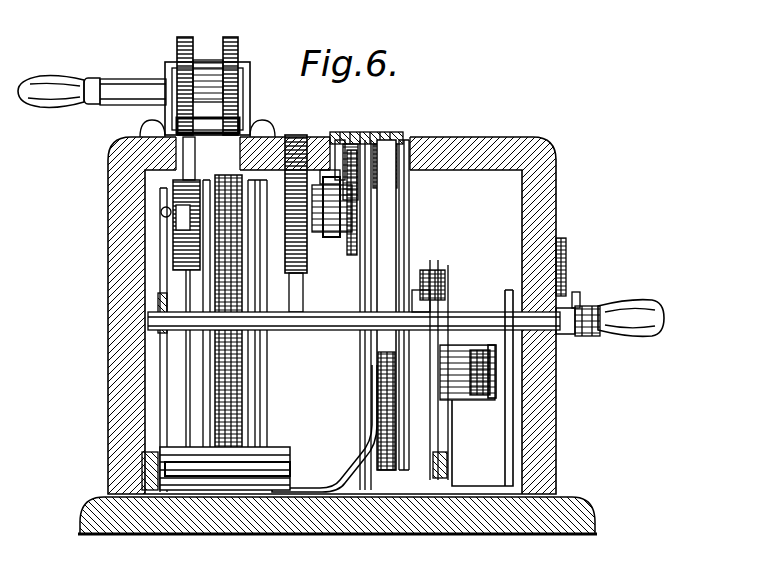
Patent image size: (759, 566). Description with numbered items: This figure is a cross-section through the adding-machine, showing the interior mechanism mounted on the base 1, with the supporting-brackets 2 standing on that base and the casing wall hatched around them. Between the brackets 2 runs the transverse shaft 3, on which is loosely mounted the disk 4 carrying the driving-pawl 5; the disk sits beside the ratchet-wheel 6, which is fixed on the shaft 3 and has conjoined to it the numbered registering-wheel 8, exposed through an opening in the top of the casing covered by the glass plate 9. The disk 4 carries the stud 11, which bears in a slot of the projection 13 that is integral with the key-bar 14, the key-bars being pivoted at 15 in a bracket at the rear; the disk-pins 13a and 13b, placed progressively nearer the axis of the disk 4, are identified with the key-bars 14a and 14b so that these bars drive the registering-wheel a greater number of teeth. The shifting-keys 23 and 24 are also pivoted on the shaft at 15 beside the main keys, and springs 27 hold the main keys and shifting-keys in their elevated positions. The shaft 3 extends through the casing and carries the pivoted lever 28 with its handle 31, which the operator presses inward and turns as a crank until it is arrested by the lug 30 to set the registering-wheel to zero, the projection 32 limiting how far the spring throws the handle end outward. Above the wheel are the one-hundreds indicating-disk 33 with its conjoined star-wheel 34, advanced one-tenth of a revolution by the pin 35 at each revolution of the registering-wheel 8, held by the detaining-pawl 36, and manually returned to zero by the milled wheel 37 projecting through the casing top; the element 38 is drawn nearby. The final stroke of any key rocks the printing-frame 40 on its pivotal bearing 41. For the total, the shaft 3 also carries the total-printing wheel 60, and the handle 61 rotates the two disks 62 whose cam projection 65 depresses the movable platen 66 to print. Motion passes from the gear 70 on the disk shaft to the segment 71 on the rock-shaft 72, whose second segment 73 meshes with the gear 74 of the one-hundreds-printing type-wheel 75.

The base 1 is at (172, 516).
The brackets 2 is at (165, 403).
The transverse shaft 3 is at (372, 343).
The disk 4 is at (412, 250).
The driving-pawl 5 is at (406, 268).
The ratchet-wheel 6 is at (365, 352).
The registering-wheel 8 is at (372, 370).
The glass plate 9 is at (377, 136).
The stud 11 is at (442, 276).
The projection 13 is at (482, 276).
The pin 13a is at (418, 302).
The pin 13b is at (560, 252).
The key-bar 14 is at (445, 420).
The key-bar 14a is at (375, 413).
The key-bar 14b is at (495, 380).
The pivot 15 is at (494, 353).
The shifting-key 23 is at (421, 438).
The shifting-key 24 is at (560, 345).
The springs 27 is at (460, 470).
The pivoted lever 28 is at (594, 300).
The lug 30 is at (575, 299).
The handle 31 is at (650, 302).
The projection 32 is at (577, 294).
The indicating-disk 33 is at (356, 148).
The star-wheel 34 is at (342, 178).
The pin 35 is at (398, 136).
The detaining-pawl 36 is at (366, 232).
The milled wheel 37 is at (291, 292).
The stop lug 38 is at (333, 178).
The frame 40 is at (150, 472).
The pivotal bearing 41 is at (140, 486).
The total-printing wheel 60 is at (238, 372).
The handle 61 is at (31, 78).
The disks 62 is at (233, 40).
The cam projection 65 is at (206, 88).
The movable platen 66 is at (200, 127).
The gear 70 is at (313, 207).
The segment 71 is at (256, 358).
The rock-shaft 72 is at (232, 474).
The segment 73 is at (185, 268).
The gear 74 is at (185, 183).
The one-hundreds-printing type-wheel 75 is at (190, 215).